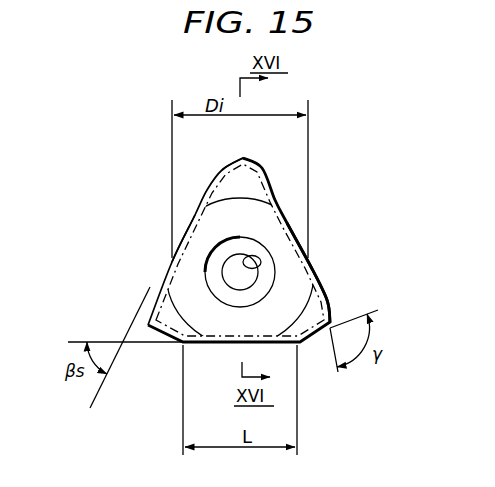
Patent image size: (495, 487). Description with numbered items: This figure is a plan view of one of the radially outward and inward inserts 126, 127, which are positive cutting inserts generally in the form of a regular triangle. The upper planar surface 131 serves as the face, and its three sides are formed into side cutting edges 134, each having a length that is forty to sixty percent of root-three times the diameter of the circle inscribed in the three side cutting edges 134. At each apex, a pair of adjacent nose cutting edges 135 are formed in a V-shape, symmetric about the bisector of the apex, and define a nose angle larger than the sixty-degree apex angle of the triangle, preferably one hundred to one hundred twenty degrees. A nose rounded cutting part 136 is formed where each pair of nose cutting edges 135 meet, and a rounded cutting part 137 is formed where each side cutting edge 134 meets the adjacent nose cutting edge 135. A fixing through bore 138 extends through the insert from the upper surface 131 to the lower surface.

The radially outward insert 126 is at (324, 262).
The radially inward insert 127 is at (390, 280).
The upper planar surface 131 is at (206, 232).
The side cutting edge 134 is at (284, 213).
The nose cutting edge 135 is at (331, 308).
The nose rounded cutting part 136 is at (352, 340).
The rounded cutting part 137 is at (327, 288).
The fixing through bore 138 is at (259, 262).